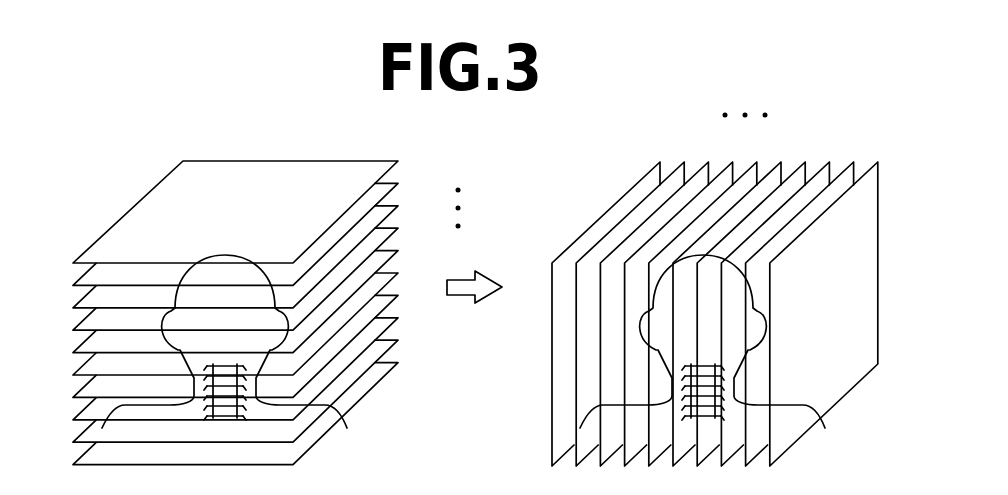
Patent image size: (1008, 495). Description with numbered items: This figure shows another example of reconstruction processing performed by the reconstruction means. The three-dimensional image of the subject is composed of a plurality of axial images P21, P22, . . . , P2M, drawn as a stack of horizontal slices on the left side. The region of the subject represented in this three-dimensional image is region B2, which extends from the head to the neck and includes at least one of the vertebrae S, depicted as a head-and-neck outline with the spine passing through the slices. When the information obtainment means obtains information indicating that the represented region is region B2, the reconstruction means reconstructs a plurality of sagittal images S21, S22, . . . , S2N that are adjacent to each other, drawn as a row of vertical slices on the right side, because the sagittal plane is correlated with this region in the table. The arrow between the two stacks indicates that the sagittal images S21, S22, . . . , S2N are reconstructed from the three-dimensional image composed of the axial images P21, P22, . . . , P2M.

The axial image P21 is at (398, 161).
The axial image P22 is at (398, 184).
The axial image P2M is at (398, 363).
The sagittal image S21 is at (656, 163).
The sagittal image S22 is at (673, 165).
The sagittal image S2N is at (869, 167).
The region from the head to the neck B2 is at (215, 258).
The vertebrae S is at (212, 391).